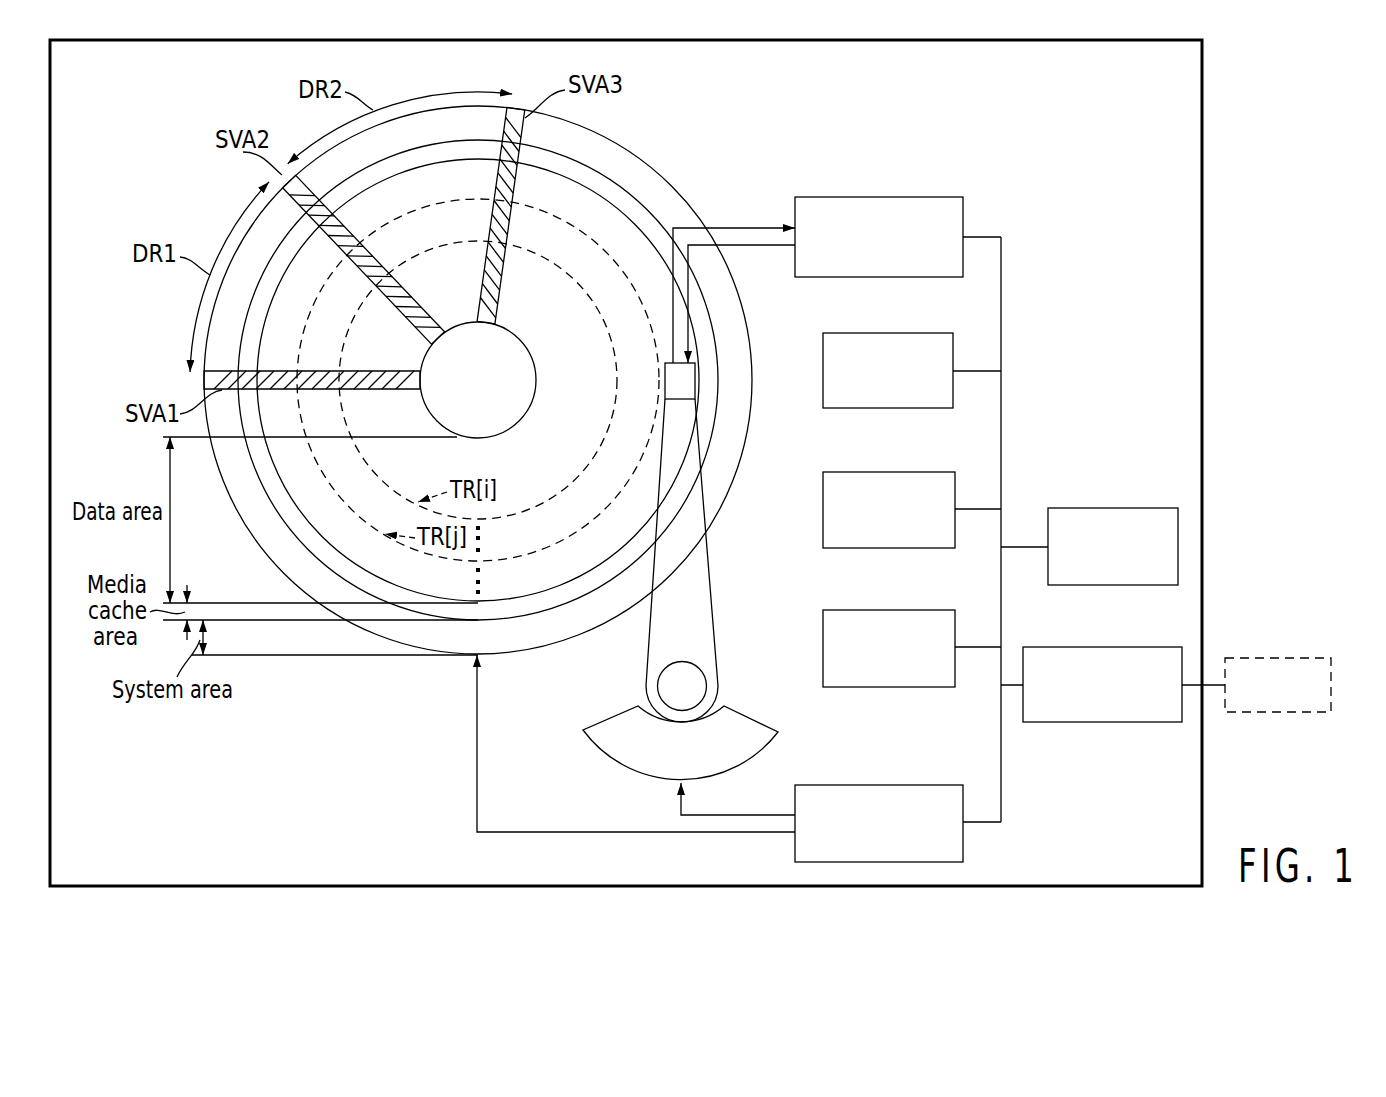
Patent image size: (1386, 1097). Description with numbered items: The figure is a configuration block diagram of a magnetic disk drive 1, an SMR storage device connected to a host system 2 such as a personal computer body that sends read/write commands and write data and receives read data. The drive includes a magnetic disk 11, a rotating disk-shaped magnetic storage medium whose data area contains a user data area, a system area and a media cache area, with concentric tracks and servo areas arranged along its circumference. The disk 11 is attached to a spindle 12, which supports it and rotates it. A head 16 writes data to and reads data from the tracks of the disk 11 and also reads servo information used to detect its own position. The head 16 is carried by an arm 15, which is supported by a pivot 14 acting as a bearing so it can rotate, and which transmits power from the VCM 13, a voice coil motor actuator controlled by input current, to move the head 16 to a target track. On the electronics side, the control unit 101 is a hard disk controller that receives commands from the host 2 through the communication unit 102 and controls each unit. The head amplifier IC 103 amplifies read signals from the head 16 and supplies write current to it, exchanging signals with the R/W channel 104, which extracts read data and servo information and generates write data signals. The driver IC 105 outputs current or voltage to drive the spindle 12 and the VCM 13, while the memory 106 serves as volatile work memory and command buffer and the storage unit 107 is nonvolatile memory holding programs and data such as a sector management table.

The magnetic disk drive 1 is at (973, 40).
The host system 2 is at (1290, 658).
The magnetic disk 11 is at (650, 165).
The spindle 12 is at (537, 375).
The VCM 13 is at (765, 718).
The pivot 14 is at (660, 690).
The arm 15 is at (712, 598).
The head 16 is at (695, 380).
The control unit 101 is at (1110, 508).
The communication unit 102 is at (1110, 647).
The head amplifier IC 103 is at (893, 197).
The R/W channel 104 is at (890, 333).
The driver IC 105 is at (890, 785).
The memory 106 is at (890, 472).
The storage unit 107 is at (890, 610).